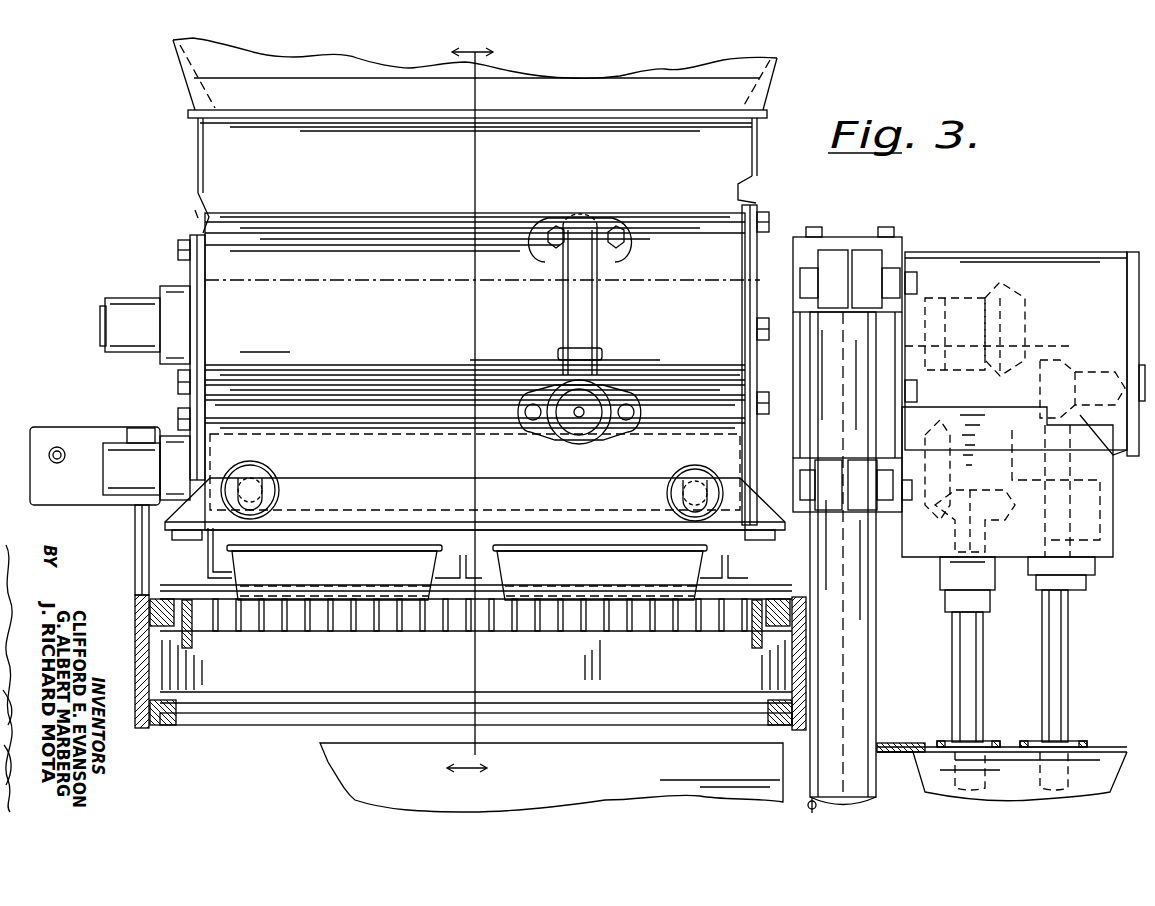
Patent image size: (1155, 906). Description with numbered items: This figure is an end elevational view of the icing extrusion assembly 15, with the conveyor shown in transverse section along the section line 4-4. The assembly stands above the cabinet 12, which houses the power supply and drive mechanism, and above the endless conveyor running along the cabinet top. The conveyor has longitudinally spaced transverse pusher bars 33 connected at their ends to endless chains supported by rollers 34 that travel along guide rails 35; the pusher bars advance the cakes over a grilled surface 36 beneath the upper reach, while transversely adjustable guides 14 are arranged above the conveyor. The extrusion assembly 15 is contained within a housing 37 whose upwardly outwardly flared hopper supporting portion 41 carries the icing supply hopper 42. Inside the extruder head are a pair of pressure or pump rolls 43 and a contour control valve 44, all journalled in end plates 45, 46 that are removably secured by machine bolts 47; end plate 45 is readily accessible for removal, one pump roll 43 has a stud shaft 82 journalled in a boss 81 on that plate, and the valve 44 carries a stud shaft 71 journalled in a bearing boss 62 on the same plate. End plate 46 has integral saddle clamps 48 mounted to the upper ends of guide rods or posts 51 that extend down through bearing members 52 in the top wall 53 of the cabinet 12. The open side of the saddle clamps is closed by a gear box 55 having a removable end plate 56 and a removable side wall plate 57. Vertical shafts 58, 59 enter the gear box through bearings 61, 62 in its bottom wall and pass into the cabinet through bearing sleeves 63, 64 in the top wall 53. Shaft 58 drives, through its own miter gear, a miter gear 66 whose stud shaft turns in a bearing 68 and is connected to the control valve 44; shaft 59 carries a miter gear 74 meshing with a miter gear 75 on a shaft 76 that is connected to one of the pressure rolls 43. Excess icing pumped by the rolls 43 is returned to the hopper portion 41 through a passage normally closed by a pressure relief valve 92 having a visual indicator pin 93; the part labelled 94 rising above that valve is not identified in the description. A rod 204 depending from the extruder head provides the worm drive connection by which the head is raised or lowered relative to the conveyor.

The section line 4- 4 is at (478, 800).
The cabinet 12 is at (342, 764).
The transversely adjustable guides 14 is at (444, 582).
The icing extrusion assembly 15 is at (790, 108).
The pusher bars 33 is at (264, 720).
The rollers 34 is at (138, 588).
The guide rails 35 is at (162, 720).
The grilled surface 36 is at (352, 628).
The housing 37 is at (197, 214).
The hopper supporting portion 41 is at (420, 169).
The icing supply hopper 42 is at (700, 84).
The pressure or pump rolls 43 is at (325, 292).
The contour control valve 44 is at (337, 508).
The end plate 45 is at (204, 312).
The end plate 46 is at (744, 268).
The machine bolts 47 is at (183, 260).
The saddle clamps 48 is at (830, 256).
The guide rods or posts 51 is at (876, 654).
The bearing members 52 is at (882, 744).
The top wall 53 is at (910, 756).
The gear box 55 is at (1052, 254).
The removable end plate 56 is at (1134, 254).
The removable side wall plate 57 is at (990, 410).
The vertical shaft 58 is at (984, 670).
The vertical shaft 59 is at (1068, 660).
The bearing 61 is at (950, 580).
The bearing 62 is at (116, 442).
The bearing sleeve 63 is at (990, 742).
The bearing sleeve 64 is at (1080, 746).
The miter gear 66 is at (975, 514).
The bearing 68 is at (914, 436).
The stud shaft 71 is at (96, 494).
The miter gear 74 is at (1080, 372).
The miter gear 75 is at (1020, 306).
The shaft 76 is at (946, 314).
The boss 81 is at (150, 304).
The stud shaft 82 is at (100, 325).
The pressure relief valve 92 is at (555, 430).
The pressure visual indicator pin 93 is at (582, 418).
The feed pipe 94 is at (598, 312).
The rod 204 is at (816, 805).